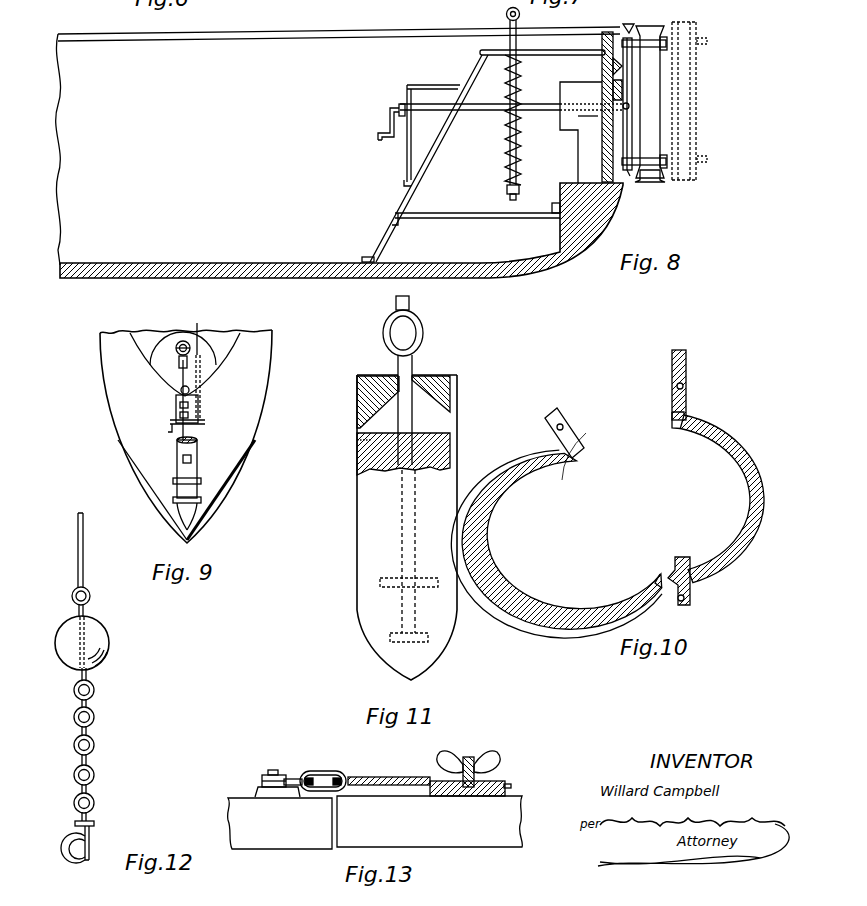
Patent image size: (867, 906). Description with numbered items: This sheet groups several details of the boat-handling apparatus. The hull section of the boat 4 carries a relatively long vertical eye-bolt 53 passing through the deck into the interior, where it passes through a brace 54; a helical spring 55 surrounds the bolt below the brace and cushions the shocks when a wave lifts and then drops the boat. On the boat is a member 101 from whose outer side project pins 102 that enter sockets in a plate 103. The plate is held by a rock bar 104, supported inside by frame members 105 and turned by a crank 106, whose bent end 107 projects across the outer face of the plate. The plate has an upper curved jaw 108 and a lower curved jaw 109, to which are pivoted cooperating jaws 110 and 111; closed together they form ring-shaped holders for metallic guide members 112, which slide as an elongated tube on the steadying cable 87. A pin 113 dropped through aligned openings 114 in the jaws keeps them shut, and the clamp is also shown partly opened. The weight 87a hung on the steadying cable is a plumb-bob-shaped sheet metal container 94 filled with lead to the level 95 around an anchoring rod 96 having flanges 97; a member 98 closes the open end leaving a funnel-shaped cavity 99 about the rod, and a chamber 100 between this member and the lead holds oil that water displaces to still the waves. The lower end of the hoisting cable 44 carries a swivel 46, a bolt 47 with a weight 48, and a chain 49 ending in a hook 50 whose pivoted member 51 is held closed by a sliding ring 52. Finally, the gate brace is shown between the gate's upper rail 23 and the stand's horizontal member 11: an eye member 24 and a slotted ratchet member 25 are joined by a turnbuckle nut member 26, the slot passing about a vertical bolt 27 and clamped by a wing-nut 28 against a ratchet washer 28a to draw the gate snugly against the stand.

In FIG. 8, the hull 4 is at (339, 152).
In FIG. 8, the eye-bolt 53 is at (508, 40).
In FIG. 9, the eye-bolt 53 is at (178, 362).
In FIG. 8, the brace 54 is at (538, 52).
In FIG. 8, the helical spring 55 is at (507, 140).
In FIG. 8, the member 101 is at (601, 69).
In FIG. 8, the pins 102 is at (605, 80).
In FIG. 9, the pins 102 is at (196, 406).
In FIG. 8, the plate 103 is at (600, 114).
In FIG. 9, the plate 103 is at (198, 433).
In FIG. 10, the plate 103 is at (687, 374).
In FIG. 8, the rock bar 104 is at (505, 112).
In FIG. 9, the rock bar 104 is at (200, 325).
In FIG. 8, the frame members 105 is at (427, 152).
In FIG. 8, the crank 106 is at (389, 126).
In FIG. 8, the bent end 107 is at (630, 105).
In FIG. 9, the bent end 107 is at (171, 430).
In FIG. 8, the curved jaw 108 is at (646, 26).
In FIG. 10, the curved jaw 108 is at (748, 454).
In FIG. 8, the curved jaw 109 is at (627, 172).
In FIG. 8, the cooperating jaw 110 is at (651, 40).
In FIG. 10, the cooperating jaw 110 is at (545, 523).
In FIG. 8, the cooperating jaw 111 is at (651, 163).
In FIG. 8, the guide members 112 is at (648, 113).
In FIG. 9, the guide members 112 is at (186, 436).
In FIG. 10, the guide members 112 is at (740, 465).
In FIG. 8, the pin 113 is at (628, 26).
In FIG. 9, the pin 113 is at (190, 392).
In FIG. 10, the openings 114 is at (684, 387).
In FIG. 12, the cable 44 is at (84, 549).
In FIG. 12, the swivel 46 is at (91, 597).
In FIG. 12, the bolt 47 is at (85, 616).
In FIG. 12, the weight 48 is at (100, 644).
In FIG. 12, the chain 49 is at (95, 717).
In FIG. 12, the hook 50 is at (90, 840).
In FIG. 12, the pivoted member 51 is at (60, 840).
In FIG. 12, the sliding ring 52 is at (95, 822).
In FIG. 11, the steadying cable 87 is at (411, 301).
In FIG. 11, the weight 87a is at (370, 510).
In FIG. 11, the sheet metal container 94 is at (385, 447).
In FIG. 11, the lead fill level 95 is at (360, 444).
In FIG. 11, the anchoring rod 96 is at (413, 366).
In FIG. 11, the flanges 97 is at (398, 635).
In FIG. 11, the member 98 is at (368, 375).
In FIG. 11, the funnel-shaped cavity 99 is at (396, 380).
In FIG. 11, the chamber 100 is at (426, 418).
In FIG. 13, the horizontal member 11 is at (429, 821).
In FIG. 13, the upper rail 23 is at (280, 823).
In FIG. 13, the eye member 24 is at (286, 775).
In FIG. 13, the slotted ratchet member 25 is at (432, 778).
In FIG. 13, the nut member 26 is at (320, 771).
In FIG. 13, the vertical bolt 27 is at (472, 757).
In FIG. 13, the wing-nut 28 is at (497, 756).
In FIG. 13, the ratchet washer 28a is at (511, 786).